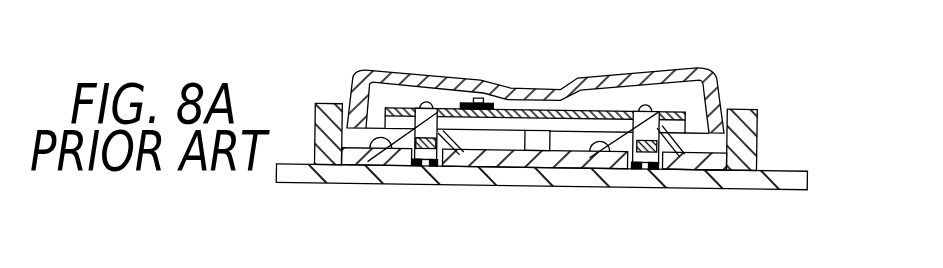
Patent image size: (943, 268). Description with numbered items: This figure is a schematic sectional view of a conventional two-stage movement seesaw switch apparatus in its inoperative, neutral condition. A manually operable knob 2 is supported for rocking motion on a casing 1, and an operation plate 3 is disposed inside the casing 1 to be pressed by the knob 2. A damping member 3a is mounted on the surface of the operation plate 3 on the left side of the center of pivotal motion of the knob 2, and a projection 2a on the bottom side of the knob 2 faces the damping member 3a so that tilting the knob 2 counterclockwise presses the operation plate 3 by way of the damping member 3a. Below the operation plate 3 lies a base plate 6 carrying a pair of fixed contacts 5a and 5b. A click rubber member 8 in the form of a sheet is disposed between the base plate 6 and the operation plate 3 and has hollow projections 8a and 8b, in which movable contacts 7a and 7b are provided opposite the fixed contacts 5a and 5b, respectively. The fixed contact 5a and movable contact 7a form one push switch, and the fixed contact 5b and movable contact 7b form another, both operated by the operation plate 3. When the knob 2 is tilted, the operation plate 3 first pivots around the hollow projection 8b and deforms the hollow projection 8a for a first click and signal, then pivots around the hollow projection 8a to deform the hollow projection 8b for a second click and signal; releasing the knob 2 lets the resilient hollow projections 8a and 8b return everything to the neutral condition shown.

The casing 1 is at (760, 117).
The manually operable knob 2 is at (667, 65).
The projection 2a is at (472, 102).
The operation plate 3 is at (590, 109).
The damping member 3a is at (493, 104).
The fixed contact 5a is at (433, 199).
The fixed contact 5b is at (634, 211).
The base plate 6 is at (798, 174).
The movable contact 7a is at (412, 154).
The movable contact 7b is at (659, 171).
The click rubber member 8 is at (705, 171).
The hollow projection 8a is at (371, 147).
The hollow projection 8b is at (596, 155).